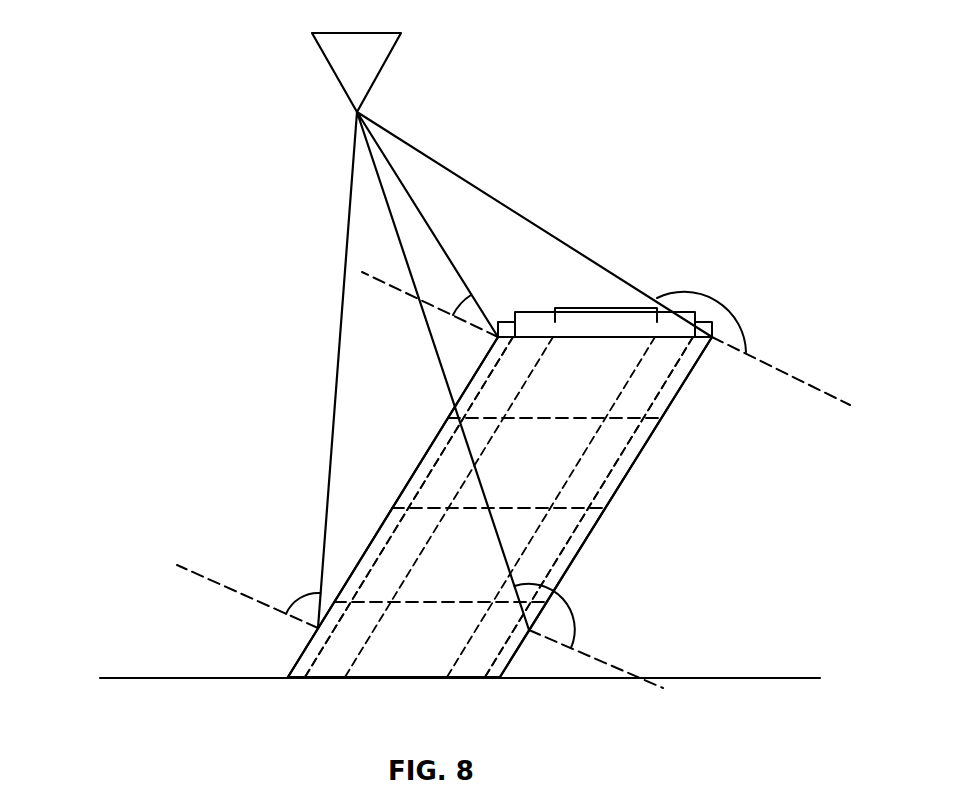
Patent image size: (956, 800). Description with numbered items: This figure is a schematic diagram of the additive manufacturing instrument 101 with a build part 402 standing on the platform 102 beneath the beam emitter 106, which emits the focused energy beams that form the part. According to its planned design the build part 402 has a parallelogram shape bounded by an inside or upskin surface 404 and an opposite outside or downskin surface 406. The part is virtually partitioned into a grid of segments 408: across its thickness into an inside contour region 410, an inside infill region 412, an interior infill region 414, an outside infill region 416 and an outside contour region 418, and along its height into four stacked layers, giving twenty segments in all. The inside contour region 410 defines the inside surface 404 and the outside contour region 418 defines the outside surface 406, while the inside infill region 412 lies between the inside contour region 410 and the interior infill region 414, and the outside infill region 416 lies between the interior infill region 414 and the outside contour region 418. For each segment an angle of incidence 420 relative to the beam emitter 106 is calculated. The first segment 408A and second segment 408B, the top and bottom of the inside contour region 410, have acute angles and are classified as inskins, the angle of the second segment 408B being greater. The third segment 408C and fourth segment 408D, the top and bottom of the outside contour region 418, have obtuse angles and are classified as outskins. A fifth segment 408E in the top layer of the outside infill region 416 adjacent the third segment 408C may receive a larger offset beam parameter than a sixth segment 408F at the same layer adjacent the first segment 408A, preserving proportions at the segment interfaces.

The additive manufacturing instrument 101 is at (114, 117).
The platform 102 is at (205, 679).
The beam emitter 106 is at (378, 60).
The build part 402 is at (553, 482).
The inside surface 404 is at (368, 542).
The outside surface 406 is at (580, 550).
The segments 408 is at (618, 438).
The first segment 408A is at (483, 363).
The second segment 408B is at (303, 648).
The third segment 408C is at (688, 375).
The fourth segment 408D is at (506, 645).
The fifth segment 408E is at (648, 395).
The sixth segment 408F is at (503, 397).
The inside contour region 410 is at (505, 322).
The inside infill region 412 is at (537, 312).
The interior infill region 414 is at (608, 308).
The outside infill region 416 is at (682, 312).
The outside contour region 418 is at (702, 322).
The angle of incidence 420 is at (455, 308).